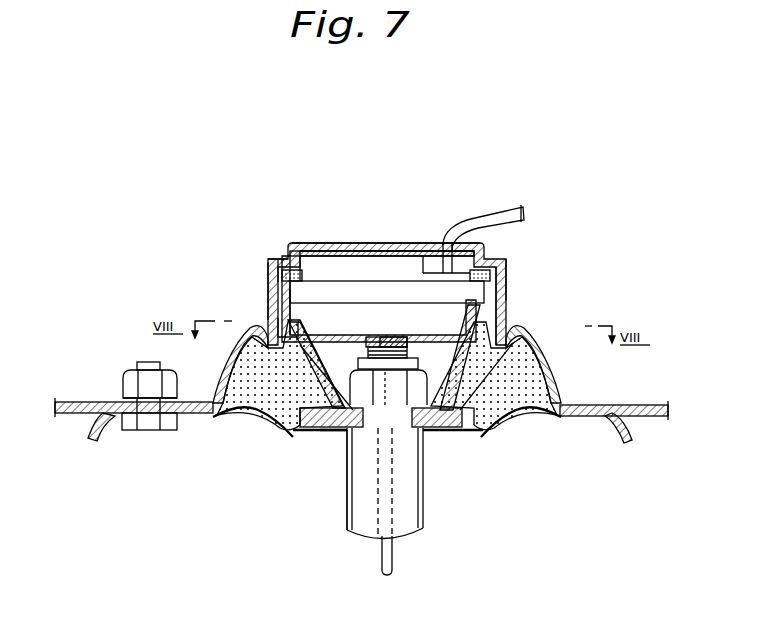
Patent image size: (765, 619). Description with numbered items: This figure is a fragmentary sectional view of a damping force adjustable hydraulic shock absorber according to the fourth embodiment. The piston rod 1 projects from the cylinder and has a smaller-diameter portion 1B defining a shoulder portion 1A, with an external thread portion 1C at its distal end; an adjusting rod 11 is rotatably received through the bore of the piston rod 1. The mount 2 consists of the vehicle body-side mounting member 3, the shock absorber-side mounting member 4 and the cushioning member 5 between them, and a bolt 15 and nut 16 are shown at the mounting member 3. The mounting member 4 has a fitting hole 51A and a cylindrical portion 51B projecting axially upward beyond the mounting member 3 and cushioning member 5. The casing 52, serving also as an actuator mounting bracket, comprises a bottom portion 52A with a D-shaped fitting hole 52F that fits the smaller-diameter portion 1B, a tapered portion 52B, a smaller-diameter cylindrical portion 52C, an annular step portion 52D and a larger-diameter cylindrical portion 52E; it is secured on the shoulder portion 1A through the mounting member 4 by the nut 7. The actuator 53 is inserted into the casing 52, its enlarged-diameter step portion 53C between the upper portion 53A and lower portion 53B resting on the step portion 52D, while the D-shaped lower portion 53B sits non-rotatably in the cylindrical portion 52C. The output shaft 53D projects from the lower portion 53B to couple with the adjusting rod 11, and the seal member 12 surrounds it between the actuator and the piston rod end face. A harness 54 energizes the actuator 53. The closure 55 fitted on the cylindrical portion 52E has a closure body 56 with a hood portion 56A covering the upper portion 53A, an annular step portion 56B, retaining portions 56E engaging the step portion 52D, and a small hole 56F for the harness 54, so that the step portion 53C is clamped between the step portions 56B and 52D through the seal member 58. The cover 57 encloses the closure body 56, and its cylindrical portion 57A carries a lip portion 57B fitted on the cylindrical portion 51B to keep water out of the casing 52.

The piston rod 1 is at (362, 530).
The shoulder portion 1A is at (348, 430).
The smaller-diameter portion 1B is at (347, 508).
The external thread portion 1C is at (218, 428).
The mount 2 is at (560, 390).
The vehicle body-side mounting member 3 is at (88, 425).
The shock absorber-side mounting member 4 is at (470, 433).
The cushioning member 5 is at (544, 418).
The nut 7 is at (293, 440).
The adjusting rod 11 is at (393, 563).
The seal member 12 is at (368, 337).
The bolt 15 is at (140, 430).
The nut 16 is at (127, 384).
The fitting hole 51A is at (406, 430).
The cylindrical portion 51B is at (500, 425).
The casing 52 is at (490, 433).
The bottom portion 52A is at (432, 422).
The tapered portion 52B is at (267, 427).
The smaller-diameter cylindrical portion 52C is at (275, 313).
The annular step portion 52D is at (527, 342).
The larger-diameter cylindrical portion 52E is at (268, 283).
The fitting hole 52F is at (343, 431).
The actuator 53 is at (468, 262).
The upper portion 53A is at (374, 250).
The lower portion 53B is at (423, 300).
The enlarged-diameter step portion 53C is at (487, 292).
The output shaft 53D is at (390, 337).
The harness 54 is at (496, 212).
The closure 55 is at (281, 244).
The closure body 56 is at (273, 262).
The hood portion 56A is at (381, 252).
The annular step portion 56B is at (497, 273).
The retaining portions 56E is at (500, 322).
The small hole 56F is at (448, 240).
The cover 57 is at (505, 270).
The cylindrical portion 57A is at (273, 302).
The lip portion 57B is at (272, 331).
The seal member 58 is at (277, 263).